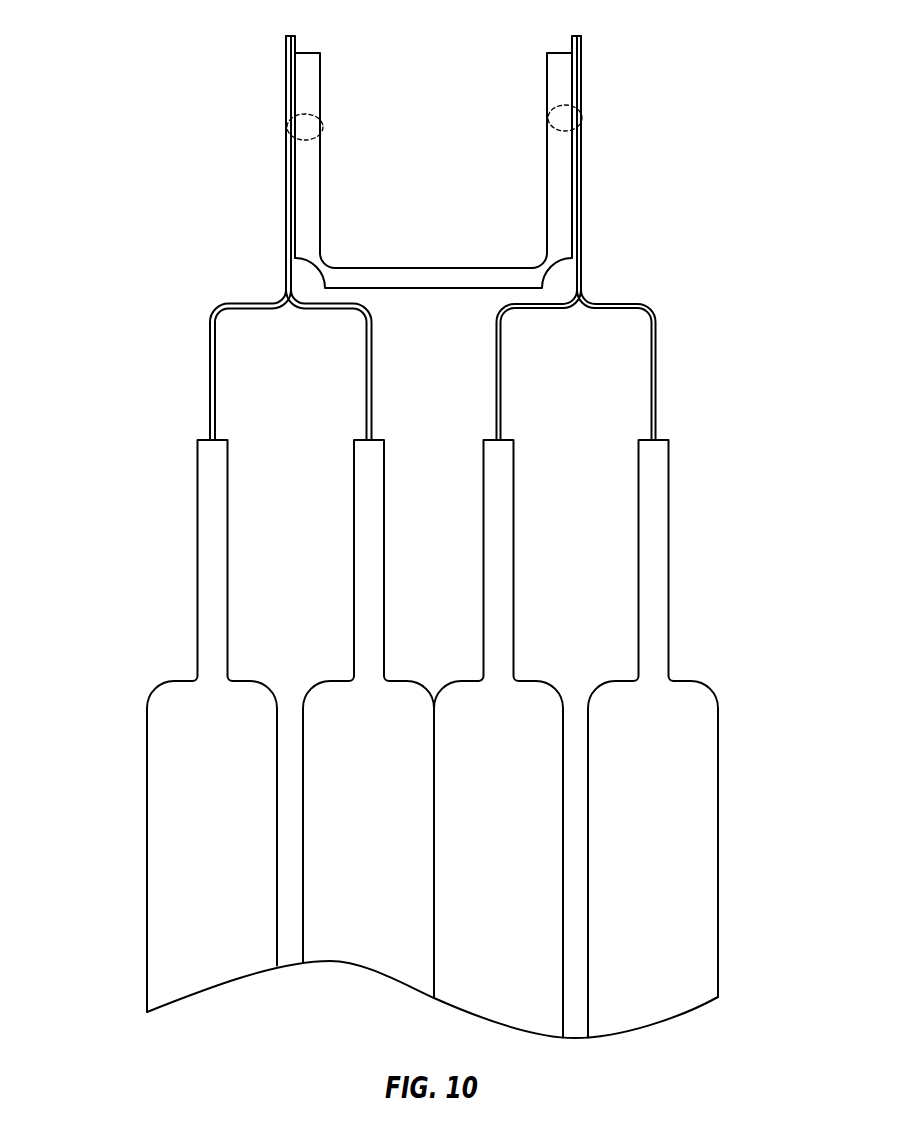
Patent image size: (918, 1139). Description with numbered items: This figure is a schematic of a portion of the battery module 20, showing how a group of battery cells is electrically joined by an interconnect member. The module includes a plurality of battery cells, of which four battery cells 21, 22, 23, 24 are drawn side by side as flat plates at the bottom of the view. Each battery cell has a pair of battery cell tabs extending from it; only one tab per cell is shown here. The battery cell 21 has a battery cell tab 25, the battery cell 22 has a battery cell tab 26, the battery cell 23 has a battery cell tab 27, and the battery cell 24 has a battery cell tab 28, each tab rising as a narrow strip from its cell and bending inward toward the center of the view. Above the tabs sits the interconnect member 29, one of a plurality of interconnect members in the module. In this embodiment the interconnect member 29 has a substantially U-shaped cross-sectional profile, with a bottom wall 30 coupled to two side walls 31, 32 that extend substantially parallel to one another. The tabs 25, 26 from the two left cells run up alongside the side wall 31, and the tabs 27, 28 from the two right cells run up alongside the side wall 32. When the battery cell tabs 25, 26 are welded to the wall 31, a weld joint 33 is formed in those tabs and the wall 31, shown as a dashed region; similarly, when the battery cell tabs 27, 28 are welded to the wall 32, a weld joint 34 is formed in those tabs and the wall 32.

The battery module 20 is at (702, 121).
The battery cell 21 is at (163, 747).
The battery cell 22 is at (323, 703).
The battery cell 23 is at (457, 702).
The battery cell 24 is at (690, 690).
The battery cell tab 25 is at (218, 308).
The battery cell tab 26 is at (330, 310).
The battery cell tab 27 is at (497, 360).
The battery cell tab 28 is at (651, 308).
The interconnect member 29 is at (318, 113).
The bottom wall 30 is at (362, 278).
The side wall 31 is at (320, 185).
The side wall 32 is at (557, 162).
The weld joint 33 is at (289, 134).
The weld joint 34 is at (577, 113).